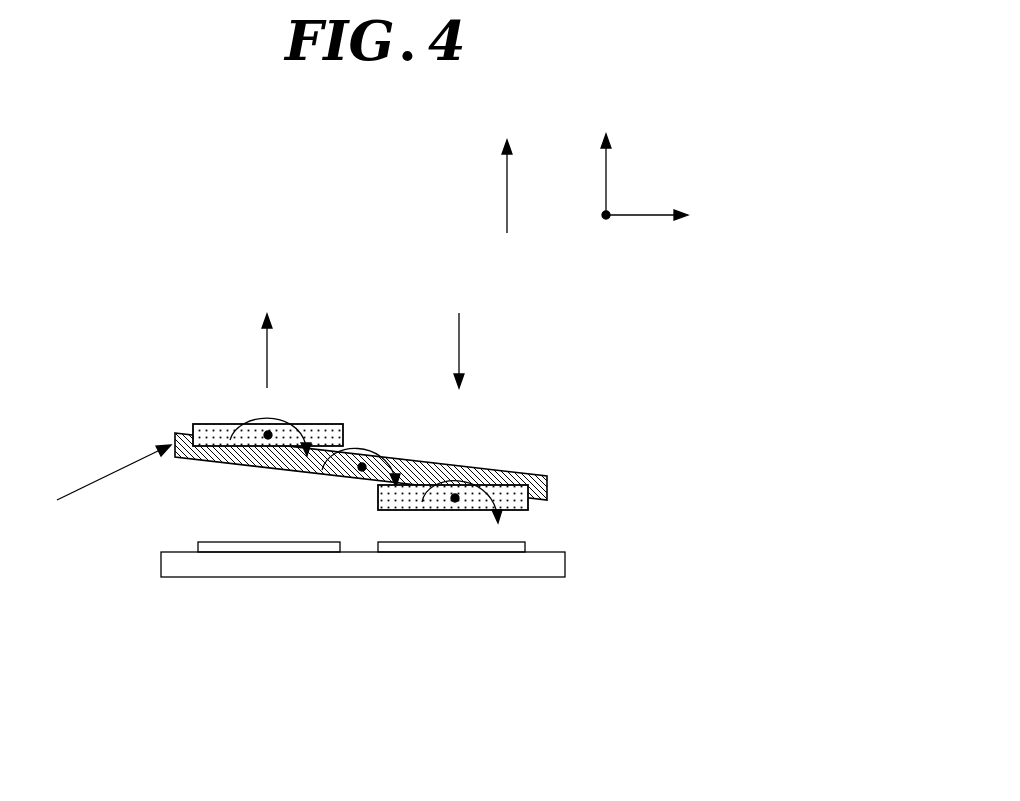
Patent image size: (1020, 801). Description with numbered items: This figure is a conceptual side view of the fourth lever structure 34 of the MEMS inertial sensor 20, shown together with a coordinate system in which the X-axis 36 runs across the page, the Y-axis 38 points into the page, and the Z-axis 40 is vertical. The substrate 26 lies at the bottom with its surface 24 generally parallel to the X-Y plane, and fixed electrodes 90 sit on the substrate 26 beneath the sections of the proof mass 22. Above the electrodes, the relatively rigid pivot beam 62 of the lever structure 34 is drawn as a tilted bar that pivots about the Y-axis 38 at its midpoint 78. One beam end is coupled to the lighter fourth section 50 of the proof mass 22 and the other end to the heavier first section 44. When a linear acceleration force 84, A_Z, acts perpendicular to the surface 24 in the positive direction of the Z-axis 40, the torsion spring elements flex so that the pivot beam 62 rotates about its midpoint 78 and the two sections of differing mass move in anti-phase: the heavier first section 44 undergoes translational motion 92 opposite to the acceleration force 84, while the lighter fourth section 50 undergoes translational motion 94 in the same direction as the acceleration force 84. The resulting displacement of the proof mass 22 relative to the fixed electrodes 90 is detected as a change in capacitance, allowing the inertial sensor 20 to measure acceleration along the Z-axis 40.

The inertial sensor 20 is at (386, 615).
The proof mass 22 is at (361, 415).
The surface 24 is at (190, 552).
The substrate 26 is at (386, 602).
The fourth lever structure 34 is at (97, 483).
The X-axis 36 is at (637, 215).
The Y-axis 38 is at (608, 220).
The Z-axis 40 is at (602, 187).
The first section 44 is at (527, 490).
The fourth section 50 is at (198, 424).
The rigid pivot beam 62 is at (547, 485).
The midpoint 78 is at (362, 470).
The acceleration force 84 is at (505, 172).
The fixed electrodes 90 is at (275, 545).
The translational motion 92 is at (462, 358).
The translational motion 94 is at (270, 370).